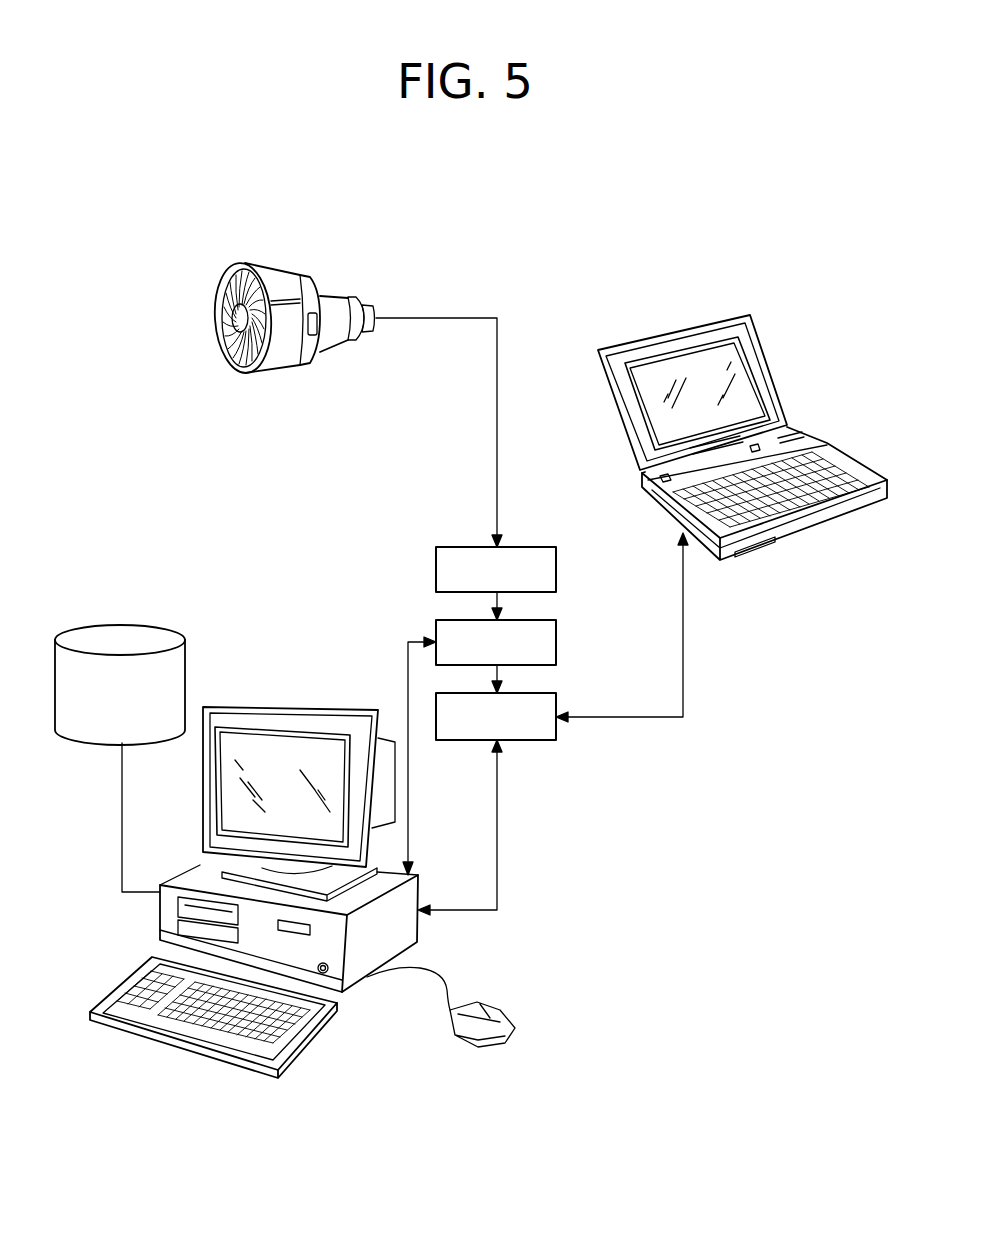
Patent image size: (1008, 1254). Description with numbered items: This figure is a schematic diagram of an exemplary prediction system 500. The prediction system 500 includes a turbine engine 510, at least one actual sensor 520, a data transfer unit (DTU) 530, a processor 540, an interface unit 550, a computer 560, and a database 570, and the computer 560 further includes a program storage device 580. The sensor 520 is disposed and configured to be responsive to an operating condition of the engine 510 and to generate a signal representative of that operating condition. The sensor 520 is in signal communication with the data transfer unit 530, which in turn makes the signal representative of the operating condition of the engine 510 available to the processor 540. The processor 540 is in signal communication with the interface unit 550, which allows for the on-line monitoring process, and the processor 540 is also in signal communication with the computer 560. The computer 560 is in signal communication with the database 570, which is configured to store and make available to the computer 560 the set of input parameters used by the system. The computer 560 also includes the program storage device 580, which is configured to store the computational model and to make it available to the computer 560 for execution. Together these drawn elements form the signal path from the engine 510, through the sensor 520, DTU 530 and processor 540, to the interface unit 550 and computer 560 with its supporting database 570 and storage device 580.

The prediction system 500 is at (138, 222).
The turbine engine 510 is at (357, 296).
The actual sensor 520 is at (558, 568).
The data transfer unit (DTU) 530 is at (558, 640).
The processor 540 is at (558, 703).
The interface unit 550 is at (781, 374).
The computer 560 is at (418, 928).
The database 570 is at (112, 624).
The program storage device 580 is at (177, 910).